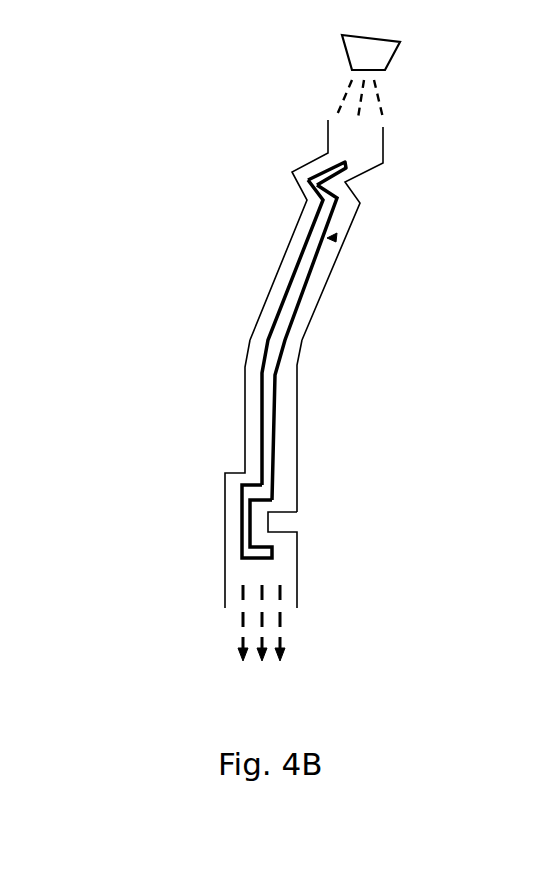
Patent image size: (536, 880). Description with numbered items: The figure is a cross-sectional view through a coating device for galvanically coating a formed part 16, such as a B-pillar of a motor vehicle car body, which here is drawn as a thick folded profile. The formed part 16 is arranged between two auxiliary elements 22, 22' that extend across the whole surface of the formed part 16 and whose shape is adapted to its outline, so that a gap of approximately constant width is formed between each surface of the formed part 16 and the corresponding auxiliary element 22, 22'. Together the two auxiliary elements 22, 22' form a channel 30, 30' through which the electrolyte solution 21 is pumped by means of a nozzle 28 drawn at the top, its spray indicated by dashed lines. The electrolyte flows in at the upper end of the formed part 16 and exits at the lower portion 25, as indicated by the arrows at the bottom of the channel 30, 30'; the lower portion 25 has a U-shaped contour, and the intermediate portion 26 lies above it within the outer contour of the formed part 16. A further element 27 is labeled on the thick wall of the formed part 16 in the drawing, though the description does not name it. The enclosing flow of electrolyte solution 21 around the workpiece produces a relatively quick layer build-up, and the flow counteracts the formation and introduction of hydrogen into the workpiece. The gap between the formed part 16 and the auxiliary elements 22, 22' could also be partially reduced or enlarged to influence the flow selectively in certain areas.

The nozzle 28 is at (385, 60).
The lower portion 25 is at (305, 180).
The formed part 16 is at (330, 238).
The auxiliary element 22' is at (228, 230).
The auxiliary element 22 is at (360, 240).
The inner liner / insert 27 is at (262, 383).
The electrolyte solution 21 is at (287, 423).
The channel 30' is at (181, 474).
The channel 30 is at (329, 546).
The intermediate portion 26 is at (240, 525).